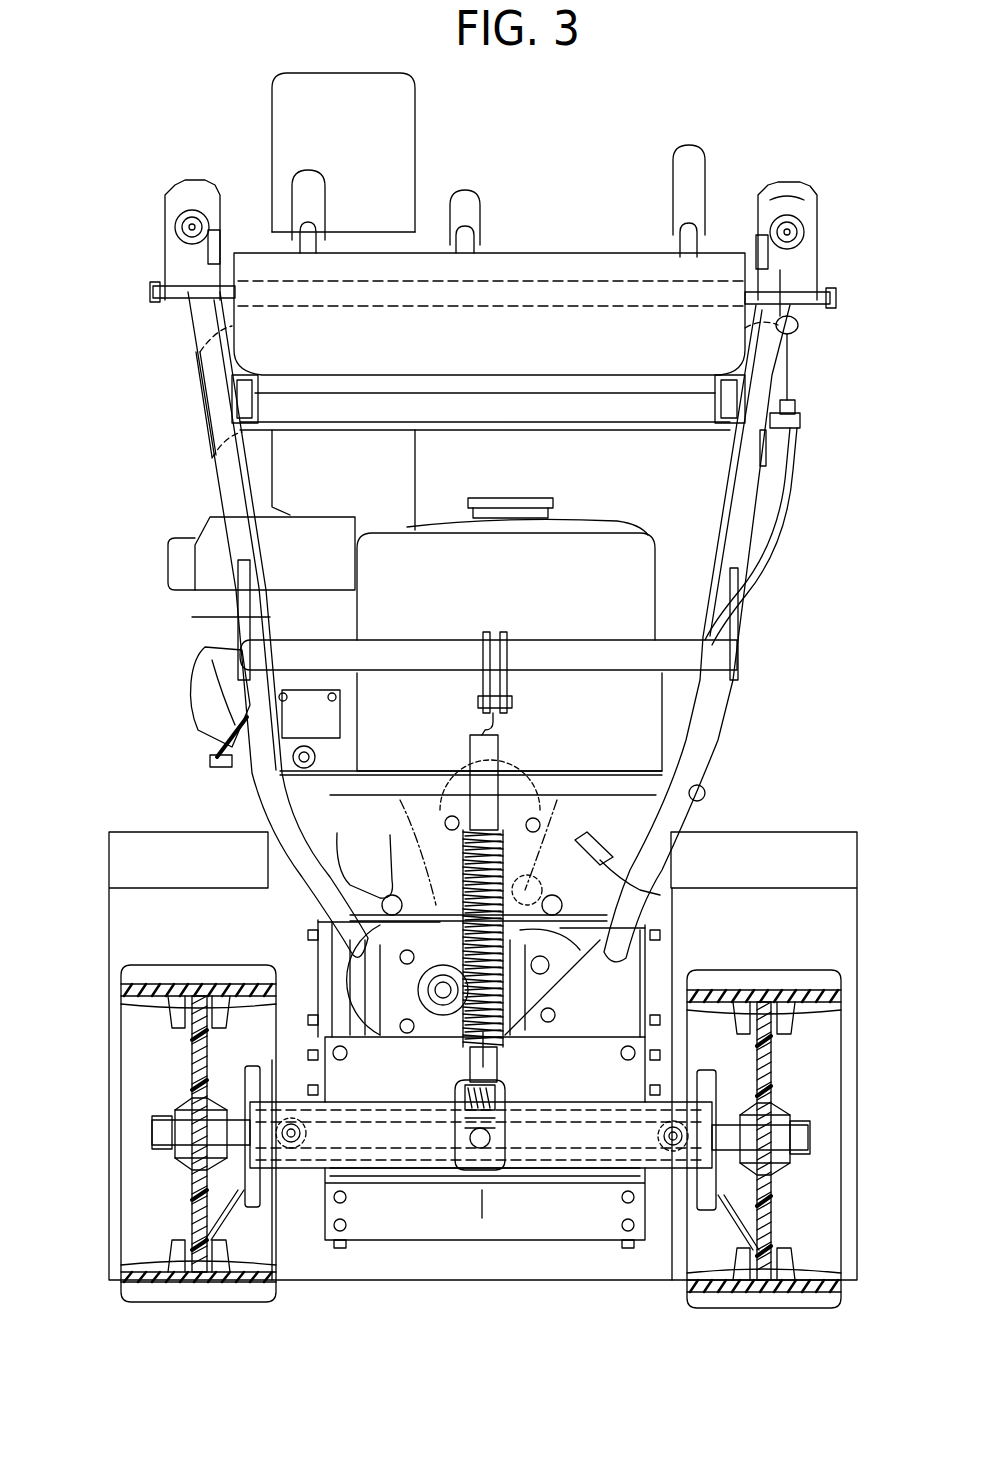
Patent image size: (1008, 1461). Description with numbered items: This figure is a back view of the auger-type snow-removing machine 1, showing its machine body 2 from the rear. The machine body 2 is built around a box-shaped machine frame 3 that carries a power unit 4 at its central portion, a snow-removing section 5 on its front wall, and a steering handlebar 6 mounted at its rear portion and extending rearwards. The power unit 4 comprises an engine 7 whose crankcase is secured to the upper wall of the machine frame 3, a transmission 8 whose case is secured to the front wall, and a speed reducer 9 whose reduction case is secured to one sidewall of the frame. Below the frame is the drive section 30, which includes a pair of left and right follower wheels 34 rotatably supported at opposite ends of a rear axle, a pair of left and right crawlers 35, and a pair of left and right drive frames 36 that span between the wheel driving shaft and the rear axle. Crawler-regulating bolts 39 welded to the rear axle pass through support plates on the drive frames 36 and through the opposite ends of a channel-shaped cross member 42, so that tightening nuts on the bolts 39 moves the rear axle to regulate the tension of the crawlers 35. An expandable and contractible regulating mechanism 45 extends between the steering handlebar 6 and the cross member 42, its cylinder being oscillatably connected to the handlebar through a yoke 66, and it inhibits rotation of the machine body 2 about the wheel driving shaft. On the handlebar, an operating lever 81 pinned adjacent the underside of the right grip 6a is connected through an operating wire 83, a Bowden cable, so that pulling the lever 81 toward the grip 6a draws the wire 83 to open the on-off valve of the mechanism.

The auger-type snow-removing machine 1 is at (585, 212).
The machine body 2 is at (748, 640).
The machine frame 3 is at (647, 973).
The power unit 4 is at (590, 519).
The snow-removing section 5 is at (762, 832).
The steering handlebar 6 is at (750, 480).
The right grip 6a is at (797, 228).
The engine 7 is at (220, 692).
The transmission 8 is at (482, 1032).
The speed reducer 9 is at (482, 1048).
The drive section 30 is at (772, 970).
The follower wheels 34 is at (192, 1068).
The crawlers 35 is at (215, 983).
The drive frames 36 is at (250, 1078).
The crawler-regulating bolts 39 is at (292, 1150).
The cross member 42 is at (560, 1160).
The regulating mechanism 45 is at (507, 757).
The yoke 66 is at (485, 680).
The operating lever 81 is at (800, 330).
The operating wire 83 is at (773, 496).